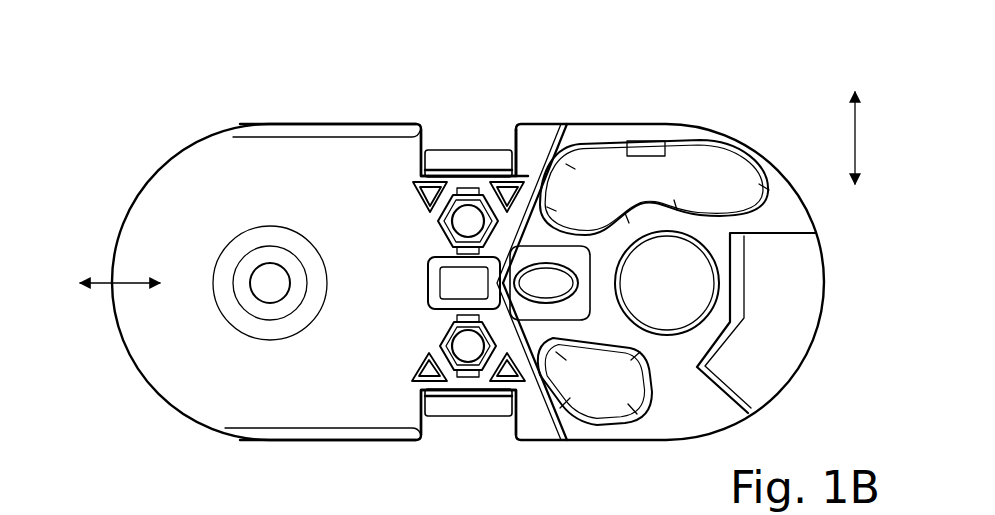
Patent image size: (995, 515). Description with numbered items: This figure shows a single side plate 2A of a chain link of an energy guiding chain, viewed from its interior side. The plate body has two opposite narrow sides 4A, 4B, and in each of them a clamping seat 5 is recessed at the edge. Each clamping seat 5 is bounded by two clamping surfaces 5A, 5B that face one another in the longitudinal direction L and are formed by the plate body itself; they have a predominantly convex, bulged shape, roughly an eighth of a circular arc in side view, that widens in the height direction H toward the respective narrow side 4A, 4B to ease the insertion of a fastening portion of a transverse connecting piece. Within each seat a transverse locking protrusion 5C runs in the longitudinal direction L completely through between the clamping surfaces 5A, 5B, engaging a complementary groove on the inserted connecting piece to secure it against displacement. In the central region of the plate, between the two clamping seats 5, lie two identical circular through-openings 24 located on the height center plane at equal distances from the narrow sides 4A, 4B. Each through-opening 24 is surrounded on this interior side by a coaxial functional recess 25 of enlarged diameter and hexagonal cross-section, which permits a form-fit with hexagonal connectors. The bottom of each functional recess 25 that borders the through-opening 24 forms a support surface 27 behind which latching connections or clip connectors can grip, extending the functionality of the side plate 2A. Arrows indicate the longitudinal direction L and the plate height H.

The side plate 2A is at (710, 95).
The narrow side 4A is at (313, 121).
The narrow side 4B is at (288, 446).
The clamping seat 5 is at (446, 431).
The clamping surface 5A is at (510, 123).
The clamping surface 5B is at (430, 123).
The transverse locking protrusion 5C is at (468, 150).
The through-opening 24 is at (443, 236).
The functional recess 25 is at (466, 224).
The support surface 27 is at (425, 209).
The longitudinal direction L is at (100, 283).
The plate height H is at (844, 138).